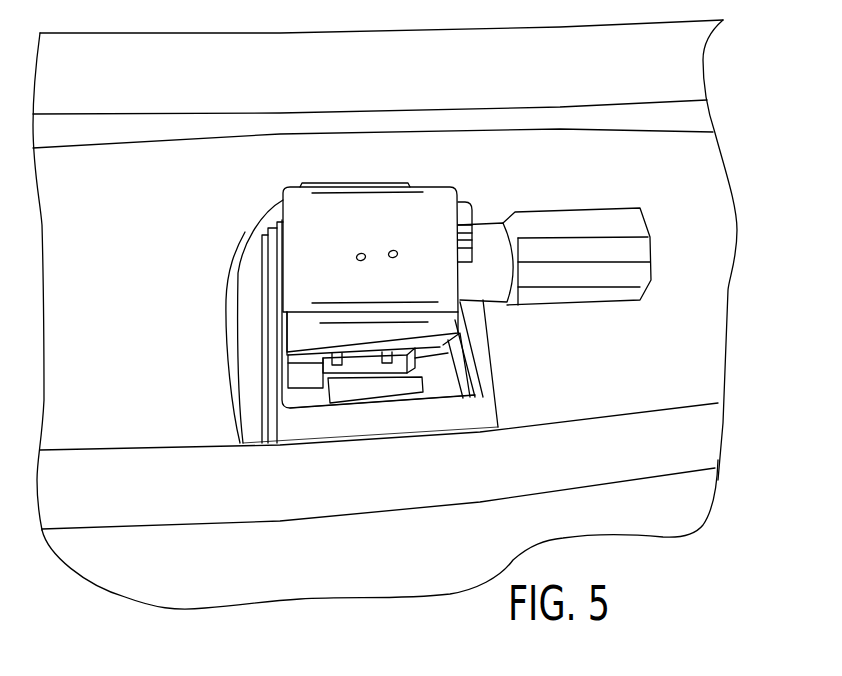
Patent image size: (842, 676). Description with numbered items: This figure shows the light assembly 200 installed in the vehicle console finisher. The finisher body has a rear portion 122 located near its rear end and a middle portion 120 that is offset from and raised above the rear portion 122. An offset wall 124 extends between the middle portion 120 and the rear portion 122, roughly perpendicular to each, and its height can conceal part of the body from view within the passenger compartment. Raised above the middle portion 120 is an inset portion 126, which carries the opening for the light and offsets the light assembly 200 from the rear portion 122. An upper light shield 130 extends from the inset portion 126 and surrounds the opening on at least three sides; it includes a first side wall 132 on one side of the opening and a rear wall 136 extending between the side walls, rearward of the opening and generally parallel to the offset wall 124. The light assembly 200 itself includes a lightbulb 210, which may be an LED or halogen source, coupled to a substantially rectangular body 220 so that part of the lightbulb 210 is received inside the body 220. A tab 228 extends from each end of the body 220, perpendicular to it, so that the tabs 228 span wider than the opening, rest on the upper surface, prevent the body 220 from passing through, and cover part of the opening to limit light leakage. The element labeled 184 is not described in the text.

The middle portion 120 is at (693, 352).
The rear portion 122 is at (667, 519).
The offset wall 124 is at (697, 446).
The inset portion 126 is at (237, 272).
The upper light shield 130 is at (343, 441).
The first side wall 132 is at (278, 385).
The rear wall 136 is at (442, 415).
The latch 184 is at (462, 354).
The light assembly 200 is at (467, 248).
The lightbulb 210 is at (618, 218).
The body 220 is at (328, 208).
The tab 228 is at (405, 383).